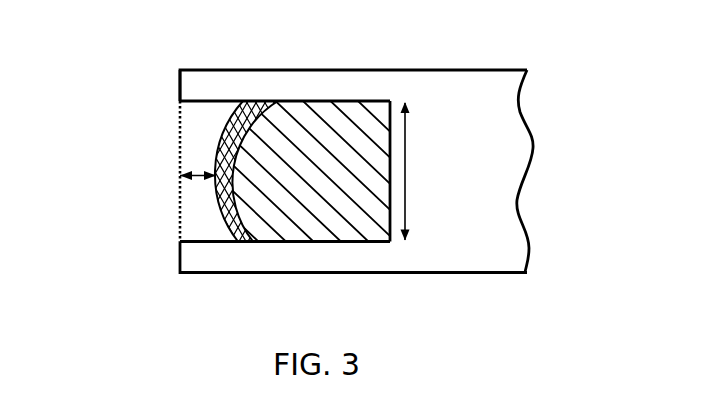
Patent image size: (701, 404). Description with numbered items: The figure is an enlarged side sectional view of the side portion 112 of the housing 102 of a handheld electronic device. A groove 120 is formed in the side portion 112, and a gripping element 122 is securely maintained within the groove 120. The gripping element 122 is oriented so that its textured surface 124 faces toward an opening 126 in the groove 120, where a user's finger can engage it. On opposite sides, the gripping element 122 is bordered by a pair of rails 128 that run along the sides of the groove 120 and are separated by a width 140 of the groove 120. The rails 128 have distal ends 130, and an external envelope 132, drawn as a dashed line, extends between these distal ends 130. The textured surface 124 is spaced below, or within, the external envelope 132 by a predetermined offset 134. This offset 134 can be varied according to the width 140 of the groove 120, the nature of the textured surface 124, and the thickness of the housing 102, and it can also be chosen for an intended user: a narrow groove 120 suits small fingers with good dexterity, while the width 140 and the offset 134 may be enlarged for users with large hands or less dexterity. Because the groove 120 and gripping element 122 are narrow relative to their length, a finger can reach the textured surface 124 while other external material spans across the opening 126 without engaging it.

The housing 102 is at (513, 165).
The side portion 112 is at (92, 82).
The groove 120 is at (390, 231).
The gripping element 122 is at (348, 230).
The textured surface 124 is at (246, 150).
The opening 126 is at (198, 226).
The rails 128 is at (207, 80).
The distal ends 130 is at (180, 78).
The external envelope 132 is at (180, 135).
The offset 134 is at (198, 180).
The width 140 is at (406, 182).